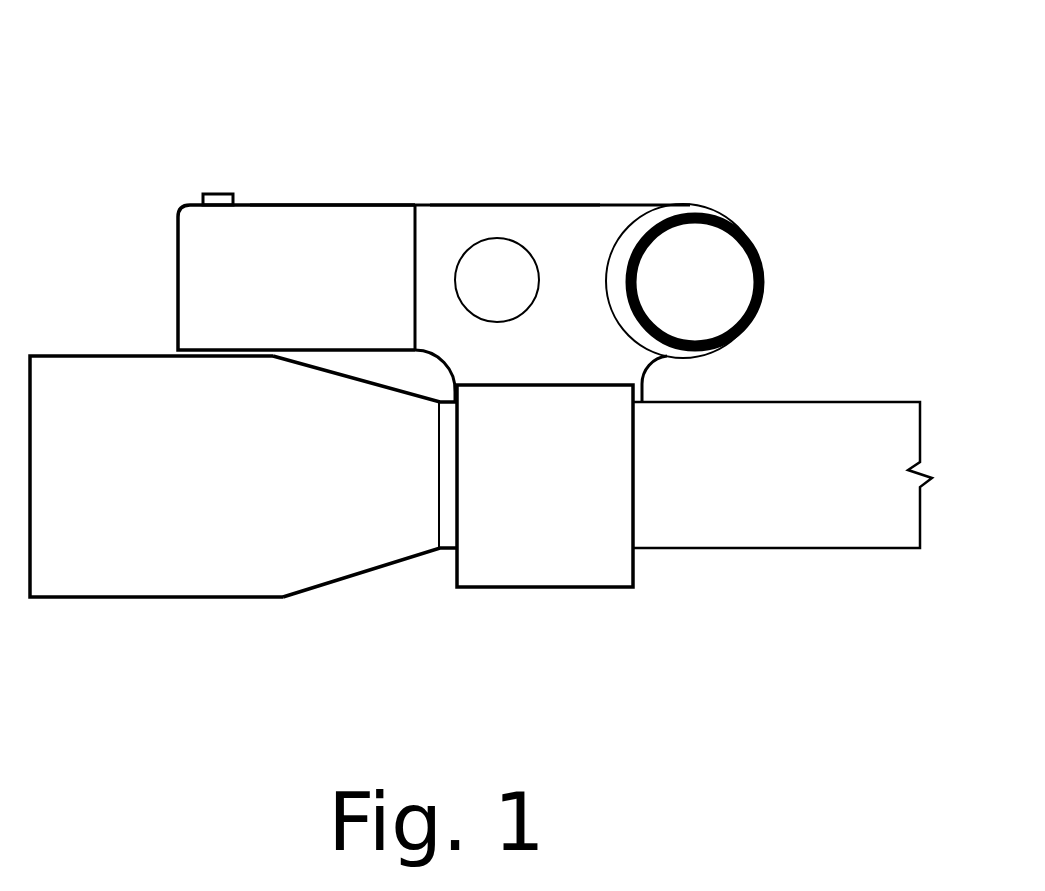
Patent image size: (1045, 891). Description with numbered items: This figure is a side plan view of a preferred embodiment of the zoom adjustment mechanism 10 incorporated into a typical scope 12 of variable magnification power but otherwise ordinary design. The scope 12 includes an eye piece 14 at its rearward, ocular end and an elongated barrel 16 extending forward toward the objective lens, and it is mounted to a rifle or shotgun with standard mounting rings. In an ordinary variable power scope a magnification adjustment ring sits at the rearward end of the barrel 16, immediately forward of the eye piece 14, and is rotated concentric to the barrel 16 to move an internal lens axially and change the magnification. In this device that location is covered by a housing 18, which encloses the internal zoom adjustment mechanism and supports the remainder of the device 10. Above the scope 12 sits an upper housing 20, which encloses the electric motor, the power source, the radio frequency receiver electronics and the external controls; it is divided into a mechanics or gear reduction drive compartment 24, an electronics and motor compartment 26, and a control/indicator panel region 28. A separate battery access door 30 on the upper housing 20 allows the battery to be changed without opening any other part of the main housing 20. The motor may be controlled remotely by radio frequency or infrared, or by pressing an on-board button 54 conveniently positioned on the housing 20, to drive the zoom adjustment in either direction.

The zoom adjustment mechanism 10 is at (687, 163).
The scope 12 is at (330, 608).
The eye piece 14 is at (210, 490).
The elongated barrel 16 is at (784, 477).
The housing 18 is at (550, 495).
The upper housing 20 is at (570, 190).
The mechanics compartment 24 is at (503, 212).
The electronics and motor compartment 26 is at (327, 252).
The control/indicator panel region 28 is at (223, 243).
The battery access door 30 is at (485, 263).
The on-board button 54 is at (230, 192).